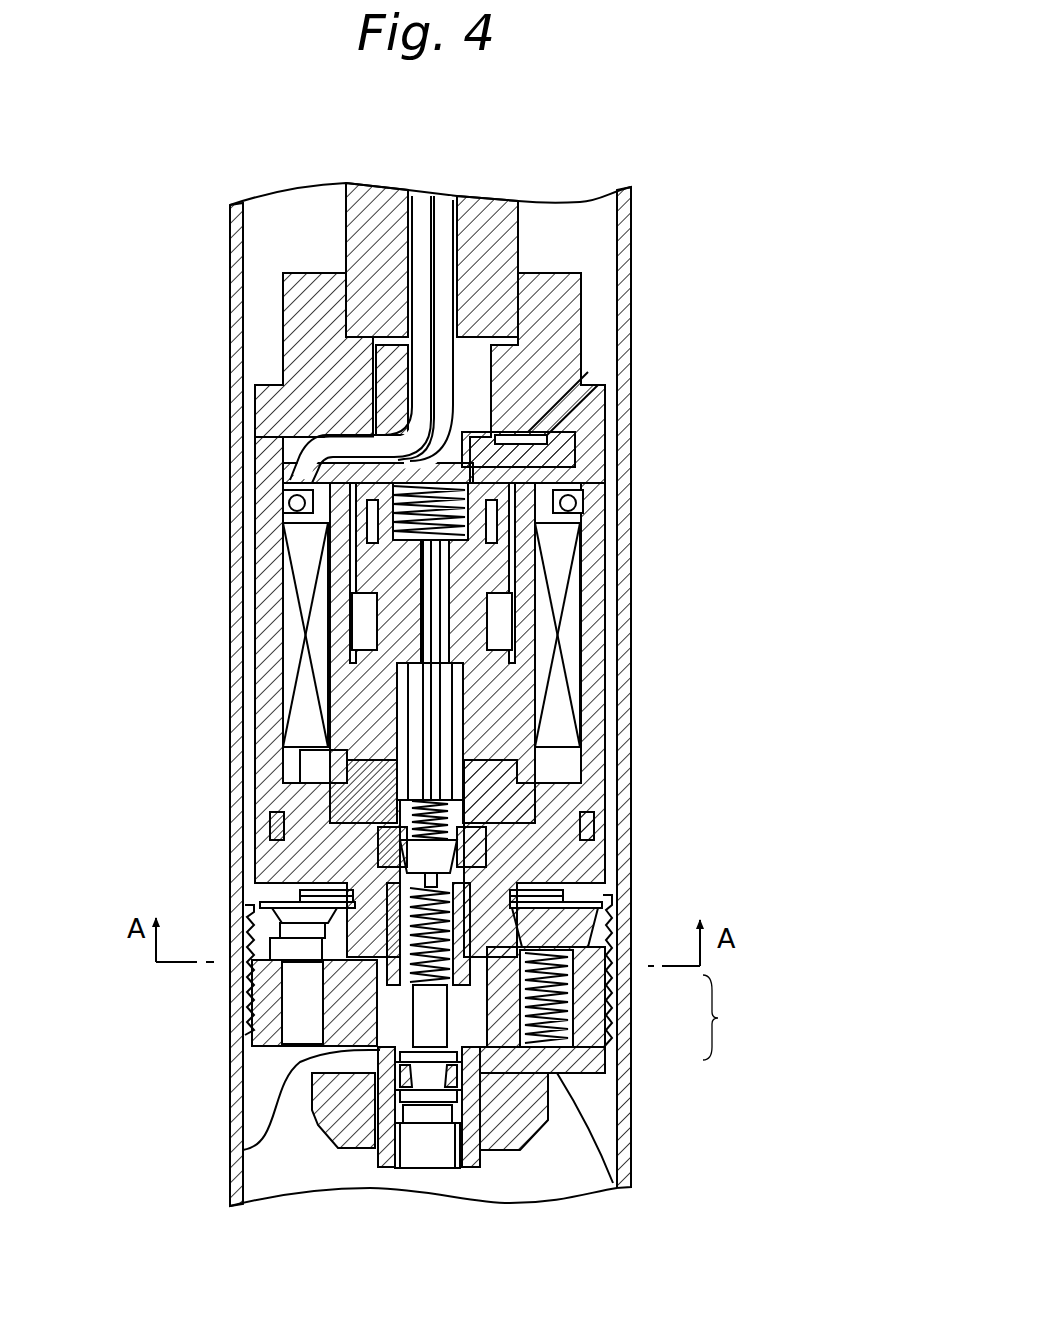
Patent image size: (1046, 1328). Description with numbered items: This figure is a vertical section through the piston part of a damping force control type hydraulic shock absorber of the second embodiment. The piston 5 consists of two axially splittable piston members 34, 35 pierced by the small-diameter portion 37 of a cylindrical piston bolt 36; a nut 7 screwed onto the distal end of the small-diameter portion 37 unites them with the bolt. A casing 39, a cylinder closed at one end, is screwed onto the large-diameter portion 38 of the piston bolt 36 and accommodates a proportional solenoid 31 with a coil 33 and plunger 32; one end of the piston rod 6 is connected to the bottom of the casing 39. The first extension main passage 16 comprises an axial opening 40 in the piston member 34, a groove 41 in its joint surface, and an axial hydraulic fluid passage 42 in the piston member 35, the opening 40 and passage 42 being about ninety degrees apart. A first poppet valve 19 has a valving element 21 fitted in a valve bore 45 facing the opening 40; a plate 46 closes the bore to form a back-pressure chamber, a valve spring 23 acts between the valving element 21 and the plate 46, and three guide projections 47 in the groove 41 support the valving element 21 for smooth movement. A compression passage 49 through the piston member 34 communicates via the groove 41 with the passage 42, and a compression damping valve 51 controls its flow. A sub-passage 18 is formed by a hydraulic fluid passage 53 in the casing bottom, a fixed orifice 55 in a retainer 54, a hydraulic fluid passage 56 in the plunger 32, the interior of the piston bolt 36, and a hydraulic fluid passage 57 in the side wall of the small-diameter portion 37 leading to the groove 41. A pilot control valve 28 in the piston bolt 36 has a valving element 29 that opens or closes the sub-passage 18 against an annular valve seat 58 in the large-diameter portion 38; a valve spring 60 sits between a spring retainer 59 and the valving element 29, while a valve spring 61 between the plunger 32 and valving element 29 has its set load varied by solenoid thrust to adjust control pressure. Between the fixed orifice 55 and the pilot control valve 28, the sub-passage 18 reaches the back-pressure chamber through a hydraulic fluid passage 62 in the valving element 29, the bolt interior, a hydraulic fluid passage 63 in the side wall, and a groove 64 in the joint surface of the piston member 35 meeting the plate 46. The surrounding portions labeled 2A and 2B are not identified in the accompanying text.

The upper outer tube 2A is at (578, 212).
The lower outer tube 2B is at (597, 1170).
The piston 5 is at (722, 1017).
The piston rod 6 is at (490, 215).
The nut 7 is at (352, 1135).
The first extension main passage 16 is at (555, 905).
The sub-passage 18 is at (473, 760).
The first poppet valve 19 is at (615, 925).
The valving element 21 is at (560, 905).
The valve spring 23 is at (627, 1115).
The pilot control valve 28 is at (365, 847).
The valving element 29 is at (390, 872).
The proportional solenoid 31 is at (597, 613).
The plunger 32 is at (460, 577).
The coil 33 is at (290, 625).
The piston member 34 is at (628, 975).
The piston member 35 is at (630, 1032).
The piston bolt 36 is at (520, 900).
The small-diameter portion 37 is at (243, 1150).
The large-diameter portion 38 is at (560, 778).
The casing 39 is at (632, 400).
The axial opening 40 is at (590, 950).
The groove 41 is at (590, 825).
The axial hydraulic fluid passage 42 is at (297, 1023).
The valve bore 45 is at (560, 1010).
The plate 46 is at (590, 1070).
The guide projections 47 is at (614, 945).
The compression passage 49 is at (262, 912).
The compression damping valve 51 is at (300, 915).
The hydraulic fluid passage 53 is at (588, 372).
The retainer 54 is at (625, 495).
The fixed orifice 55 is at (632, 445).
The hydraulic fluid passage 56 is at (432, 600).
The hydraulic fluid passage 57 is at (470, 840).
The annular valve seat 58 is at (415, 820).
The spring retainer 59 is at (432, 1160).
The valve spring 60 is at (355, 1035).
The valve spring 61 is at (300, 760).
The hydraulic fluid passage 62 is at (287, 950).
The hydraulic fluid passage 63 is at (473, 1073).
The groove 64 is at (497, 1073).